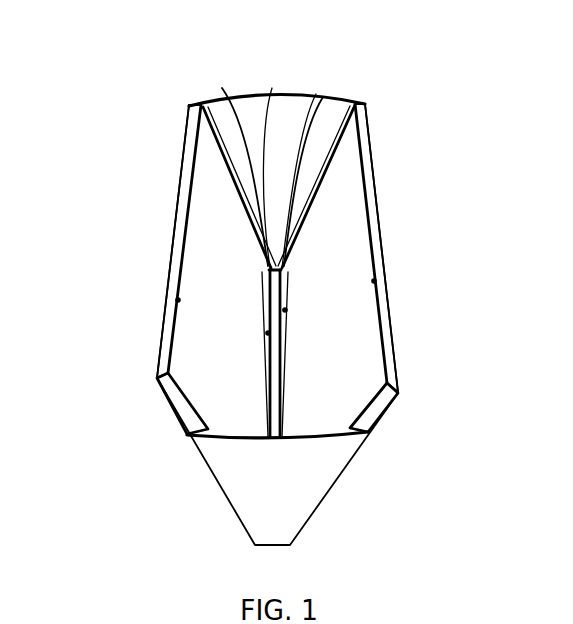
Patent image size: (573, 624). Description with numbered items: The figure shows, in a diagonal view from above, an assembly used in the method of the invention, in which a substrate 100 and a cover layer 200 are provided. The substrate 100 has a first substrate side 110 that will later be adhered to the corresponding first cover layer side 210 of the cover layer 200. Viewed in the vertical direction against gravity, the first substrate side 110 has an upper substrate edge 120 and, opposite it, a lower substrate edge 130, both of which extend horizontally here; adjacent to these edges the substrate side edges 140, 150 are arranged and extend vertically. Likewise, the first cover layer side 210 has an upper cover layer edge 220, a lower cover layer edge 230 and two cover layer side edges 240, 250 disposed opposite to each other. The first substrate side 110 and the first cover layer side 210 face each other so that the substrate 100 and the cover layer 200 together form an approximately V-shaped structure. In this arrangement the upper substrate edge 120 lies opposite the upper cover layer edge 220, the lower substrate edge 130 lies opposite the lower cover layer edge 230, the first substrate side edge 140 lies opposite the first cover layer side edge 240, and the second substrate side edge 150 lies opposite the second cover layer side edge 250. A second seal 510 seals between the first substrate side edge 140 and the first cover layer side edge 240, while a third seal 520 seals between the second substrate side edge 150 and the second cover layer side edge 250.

The substrate 100 is at (197, 333).
The first substrate side 110 is at (212, 207).
The upper substrate edge 120 is at (177, 300).
The lower substrate edge 130 is at (222, 88).
The first substrate side edge 140 is at (220, 137).
The second substrate side edge 150 is at (187, 397).
The cover layer 200 is at (355, 345).
The first cover layer side 210 is at (340, 185).
The upper cover layer edge 220 is at (374, 281).
The lower cover layer edge 230 is at (323, 97).
The first cover layer side edge 240 is at (333, 142).
The second cover layer side edge 250 is at (375, 400).
The second seal 510 is at (282, 90).
The third seal 520 is at (293, 468).